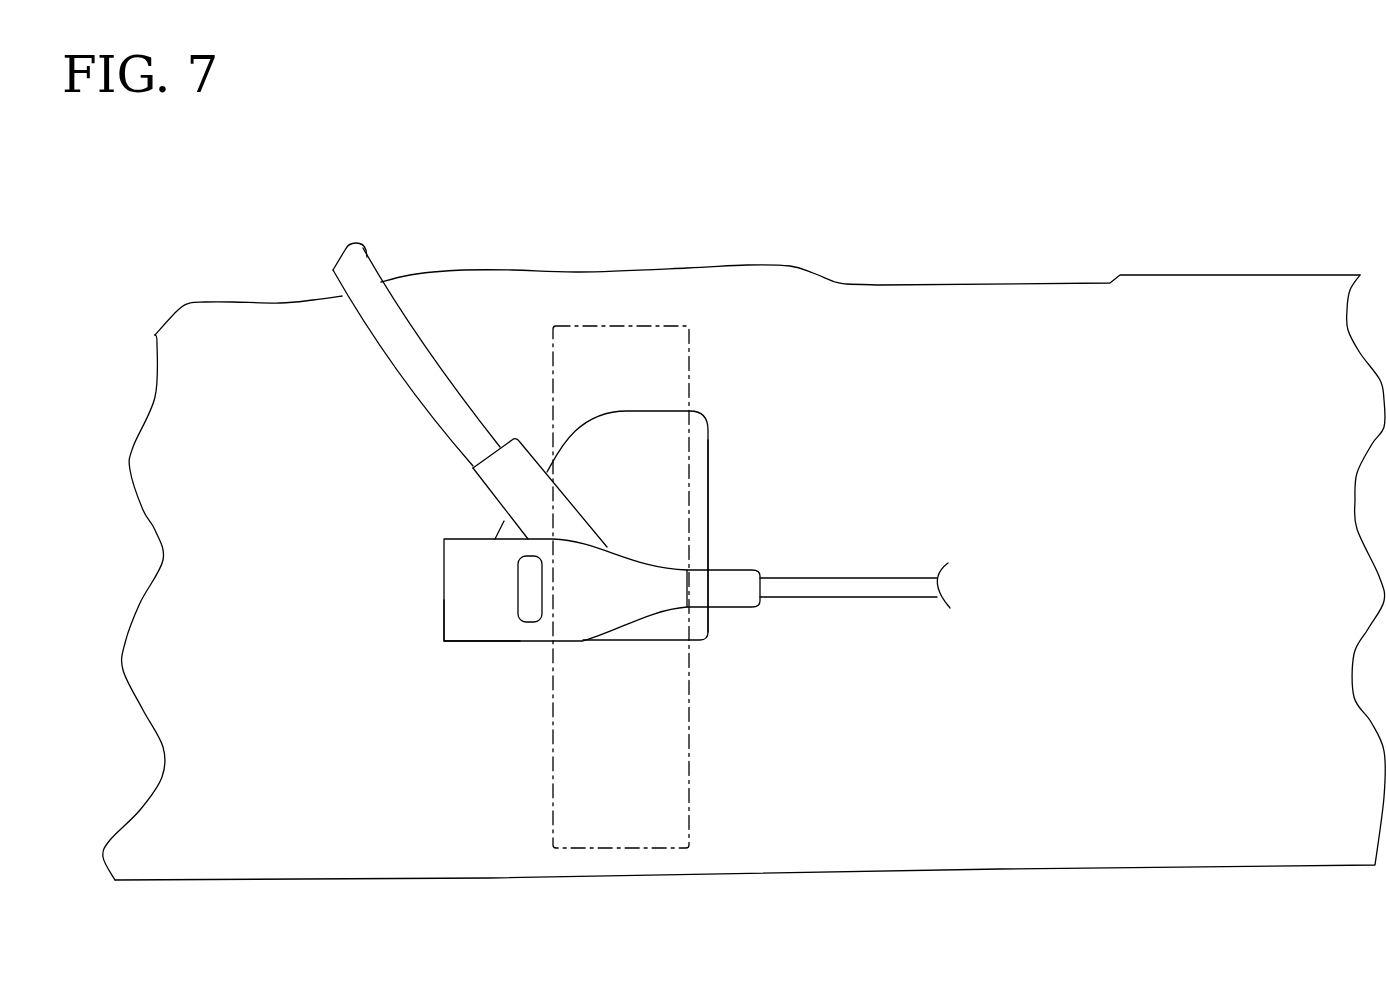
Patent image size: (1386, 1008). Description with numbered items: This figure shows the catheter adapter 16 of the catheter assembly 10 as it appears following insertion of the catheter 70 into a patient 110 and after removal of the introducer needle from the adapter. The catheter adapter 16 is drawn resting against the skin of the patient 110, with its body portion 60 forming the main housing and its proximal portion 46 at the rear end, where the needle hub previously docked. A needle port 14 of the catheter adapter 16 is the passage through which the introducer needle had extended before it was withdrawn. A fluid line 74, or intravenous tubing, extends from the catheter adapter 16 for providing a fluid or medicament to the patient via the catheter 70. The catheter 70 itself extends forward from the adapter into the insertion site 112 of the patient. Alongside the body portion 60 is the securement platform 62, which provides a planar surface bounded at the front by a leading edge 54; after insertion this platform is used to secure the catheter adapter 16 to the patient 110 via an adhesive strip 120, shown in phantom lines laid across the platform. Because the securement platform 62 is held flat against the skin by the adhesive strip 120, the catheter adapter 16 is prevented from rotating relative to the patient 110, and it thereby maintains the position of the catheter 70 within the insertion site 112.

The catheter assembly 10 is at (299, 381).
The needle port 14 is at (443, 592).
The catheter adapter 16 is at (494, 604).
The proximal portion 46 is at (443, 627).
The leading edge 54 is at (708, 508).
The body portion 60 is at (498, 615).
The securement platform 62 is at (704, 437).
The catheter 70 is at (866, 588).
The fluid line 74 is at (393, 333).
The patient 110 is at (1032, 327).
The insertion site 112 is at (940, 593).
The adhesive strip 120 is at (608, 323).